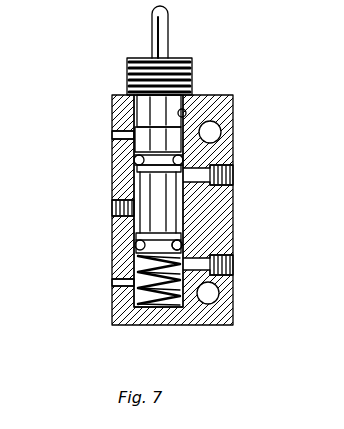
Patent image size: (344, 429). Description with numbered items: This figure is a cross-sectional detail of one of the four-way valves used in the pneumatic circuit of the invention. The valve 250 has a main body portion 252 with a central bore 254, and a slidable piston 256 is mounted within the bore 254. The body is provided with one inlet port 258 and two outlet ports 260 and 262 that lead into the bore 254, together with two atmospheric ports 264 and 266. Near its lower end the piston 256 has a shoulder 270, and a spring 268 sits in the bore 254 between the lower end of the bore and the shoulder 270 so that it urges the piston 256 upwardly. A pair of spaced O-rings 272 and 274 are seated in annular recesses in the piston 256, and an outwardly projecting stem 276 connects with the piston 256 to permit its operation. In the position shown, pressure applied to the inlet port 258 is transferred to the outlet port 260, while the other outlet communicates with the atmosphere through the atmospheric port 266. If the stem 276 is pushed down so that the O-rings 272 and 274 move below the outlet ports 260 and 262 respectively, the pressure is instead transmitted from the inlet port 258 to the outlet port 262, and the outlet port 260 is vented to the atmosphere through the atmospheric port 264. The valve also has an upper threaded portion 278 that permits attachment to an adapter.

The four-way valve 250 is at (150, 326).
The main body portion 252 is at (118, 260).
The central bore 254 is at (215, 208).
The slidable piston 256 is at (150, 190).
The inlet port 258 is at (113, 208).
The outlet port 260 is at (233, 175).
The outlet port 262 is at (234, 263).
The atmospheric port 264 is at (113, 134).
The atmospheric port 266 is at (113, 283).
The spring 268 is at (188, 313).
The shoulder 270 is at (186, 246).
The O-ring 272 is at (135, 162).
The O-ring 274 is at (136, 245).
The stem 276 is at (167, 20).
The upper threaded portion 278 is at (192, 72).